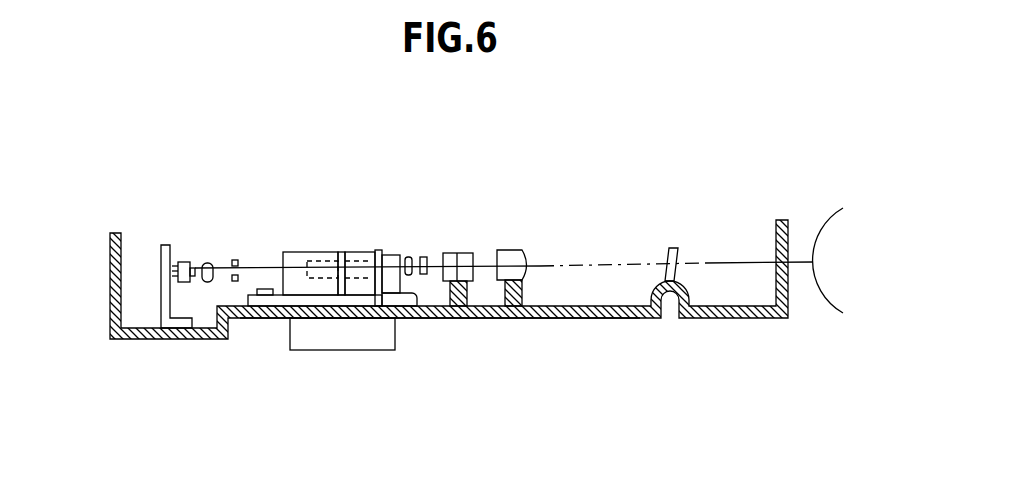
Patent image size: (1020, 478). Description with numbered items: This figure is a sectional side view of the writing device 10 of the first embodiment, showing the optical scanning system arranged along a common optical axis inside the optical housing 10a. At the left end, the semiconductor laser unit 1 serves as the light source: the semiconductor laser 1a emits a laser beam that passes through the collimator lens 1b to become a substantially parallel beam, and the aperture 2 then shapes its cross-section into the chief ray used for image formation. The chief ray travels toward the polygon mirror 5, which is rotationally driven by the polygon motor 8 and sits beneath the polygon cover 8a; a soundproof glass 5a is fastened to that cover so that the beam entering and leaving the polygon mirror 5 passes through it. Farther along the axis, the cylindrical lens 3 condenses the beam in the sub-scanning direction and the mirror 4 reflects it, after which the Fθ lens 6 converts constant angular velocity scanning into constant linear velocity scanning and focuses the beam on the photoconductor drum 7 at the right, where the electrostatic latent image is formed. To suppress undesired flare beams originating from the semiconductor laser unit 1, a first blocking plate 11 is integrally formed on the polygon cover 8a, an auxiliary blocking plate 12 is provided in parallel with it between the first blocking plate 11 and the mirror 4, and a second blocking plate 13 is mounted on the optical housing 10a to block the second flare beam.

The semiconductor laser unit 1 is at (166, 245).
The semiconductor laser 1a is at (189, 262).
The collimator lens 1b is at (208, 263).
The aperture 2 is at (236, 258).
The cylindrical lens 3 is at (424, 257).
The mirror 4 is at (462, 256).
The polygon mirror 5 is at (323, 262).
The soundproof glass 5a is at (397, 292).
The Fθ lens 6 is at (670, 248).
The photoconductor drum 7 is at (831, 307).
The polygon motor 8 is at (351, 350).
The polygon cover 8a is at (297, 252).
The writing device 10 is at (190, 354).
The optical housing 10a is at (543, 318).
The first blocking plate 11 is at (342, 262).
The auxiliary blocking plate 12 is at (409, 257).
The second blocking plate 13 is at (378, 252).